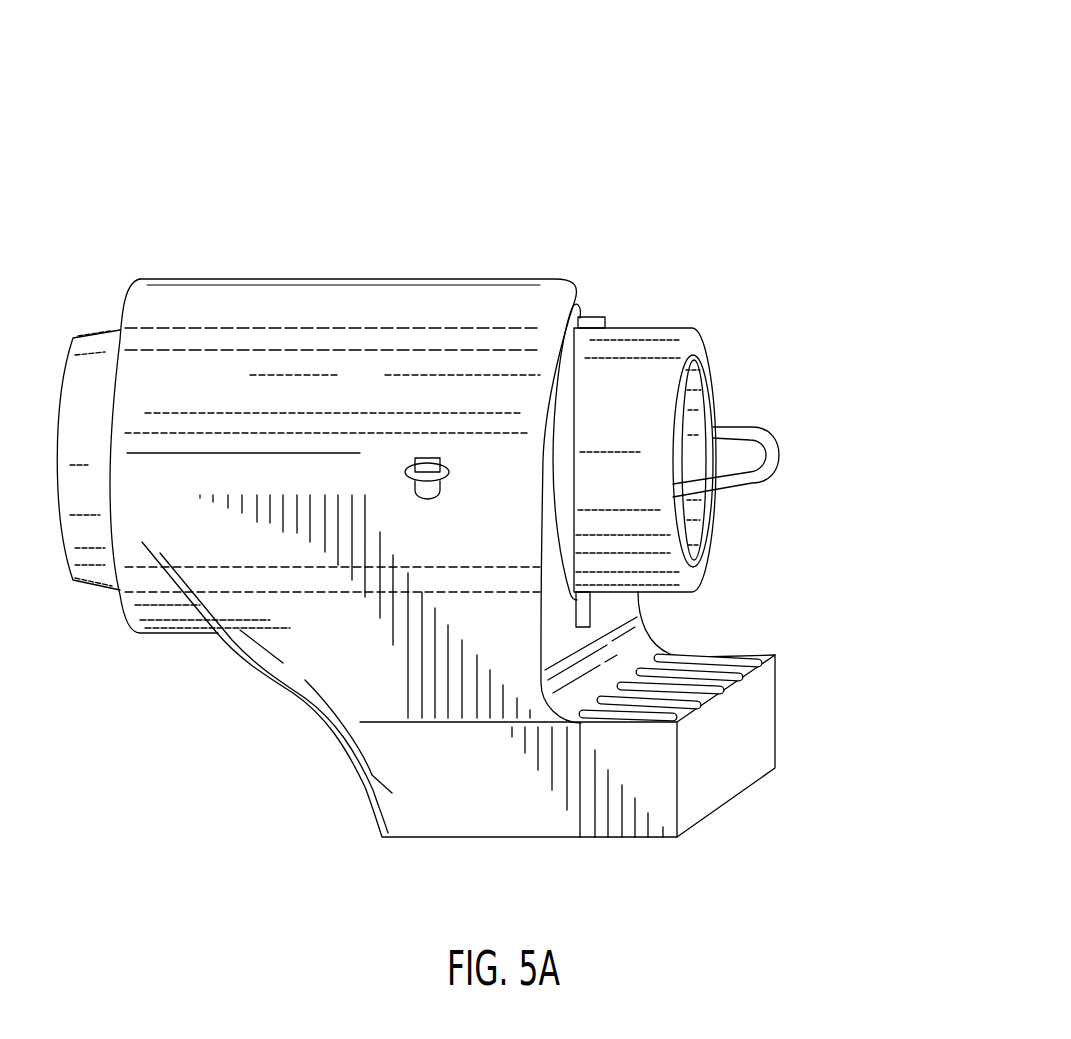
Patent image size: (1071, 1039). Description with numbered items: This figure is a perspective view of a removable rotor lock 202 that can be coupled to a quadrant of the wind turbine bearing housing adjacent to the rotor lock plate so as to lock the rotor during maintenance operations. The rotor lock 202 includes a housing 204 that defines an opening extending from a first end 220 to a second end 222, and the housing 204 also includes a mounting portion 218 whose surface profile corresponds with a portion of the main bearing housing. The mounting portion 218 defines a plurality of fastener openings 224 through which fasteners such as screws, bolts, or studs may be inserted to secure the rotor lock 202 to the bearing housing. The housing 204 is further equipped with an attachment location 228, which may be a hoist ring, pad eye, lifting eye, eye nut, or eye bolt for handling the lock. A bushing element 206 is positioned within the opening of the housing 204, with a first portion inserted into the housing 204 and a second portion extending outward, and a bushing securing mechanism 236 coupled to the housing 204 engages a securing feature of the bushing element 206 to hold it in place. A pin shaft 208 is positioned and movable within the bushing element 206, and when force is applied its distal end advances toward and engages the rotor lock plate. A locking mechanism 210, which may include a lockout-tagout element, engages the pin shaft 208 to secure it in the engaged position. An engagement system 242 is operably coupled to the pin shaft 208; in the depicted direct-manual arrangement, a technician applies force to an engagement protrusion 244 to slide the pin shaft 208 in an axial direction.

The removable rotor lock 202 is at (500, 85).
The housing 204 is at (317, 665).
The bushing element 206 is at (558, 418).
The pin shaft 208 is at (650, 417).
The locking mechanism 210 is at (607, 318).
The mounting portion 218 is at (610, 807).
The first end 220 is at (583, 265).
The second end 222 is at (113, 270).
The fastener openings 224 is at (717, 655).
The attachment location 228 is at (428, 462).
The bushing securing mechanism 236 is at (577, 610).
The engagement system 242 is at (787, 483).
The engagement protrusion 244 is at (726, 462).